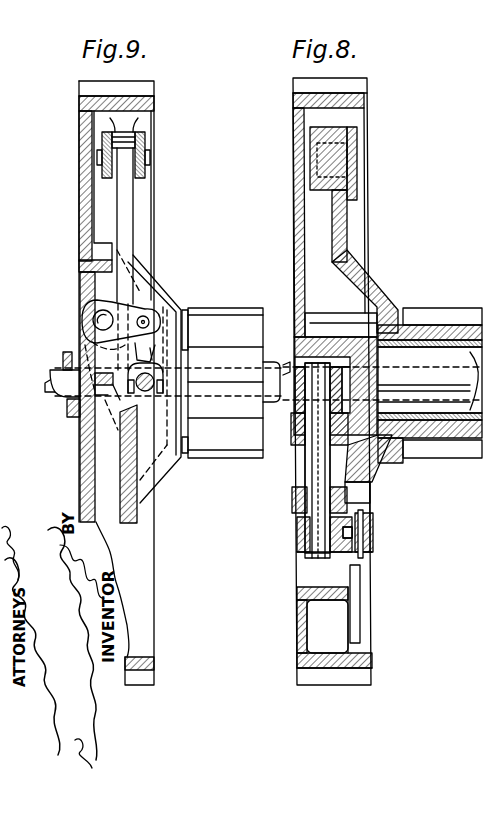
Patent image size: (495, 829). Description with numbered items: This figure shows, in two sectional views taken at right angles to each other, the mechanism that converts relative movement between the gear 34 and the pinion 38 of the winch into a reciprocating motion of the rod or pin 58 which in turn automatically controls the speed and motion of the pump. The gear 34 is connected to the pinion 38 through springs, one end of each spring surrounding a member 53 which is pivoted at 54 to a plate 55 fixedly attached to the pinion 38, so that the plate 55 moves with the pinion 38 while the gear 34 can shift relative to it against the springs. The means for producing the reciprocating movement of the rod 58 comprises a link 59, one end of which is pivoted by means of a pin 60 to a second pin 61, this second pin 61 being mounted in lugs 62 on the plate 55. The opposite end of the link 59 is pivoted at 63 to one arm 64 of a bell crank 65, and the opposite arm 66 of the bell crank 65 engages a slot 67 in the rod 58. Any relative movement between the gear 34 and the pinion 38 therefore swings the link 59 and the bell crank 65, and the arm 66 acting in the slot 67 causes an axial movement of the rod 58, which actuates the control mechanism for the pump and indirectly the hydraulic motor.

In FIG. 8, the gear 34 is at (293, 112).
In FIG. 9, the gear 34 is at (79, 136).
In FIG. 8, the pinion 38 is at (460, 312).
In FIG. 9, the pinion 38 is at (232, 328).
In FIG. 9, the member 53 is at (140, 134).
In FIG. 9, the pivot 54 is at (150, 158).
In FIG. 8, the plate 55 is at (350, 258).
In FIG. 9, the plate 55 is at (139, 515).
In FIG. 9, the rod or pin 58 is at (63, 408).
In FIG. 8, the link 59 is at (373, 537).
In FIG. 9, the link 59 is at (152, 346).
In FIG. 9, the pin 60 is at (152, 392).
In FIG. 9, the second pin 61 is at (143, 503).
In FIG. 9, the lugs 62 is at (120, 432).
In FIG. 8, the pivot 63 is at (366, 556).
In FIG. 8, the arm 64 is at (371, 523).
In FIG. 9, the arm 64 is at (136, 313).
In FIG. 8, the bell crank 65 is at (318, 466).
In FIG. 9, the bell crank 65 is at (93, 320).
In FIG. 9, the arm 66 is at (80, 350).
In FIG. 9, the slot 67 is at (80, 433).